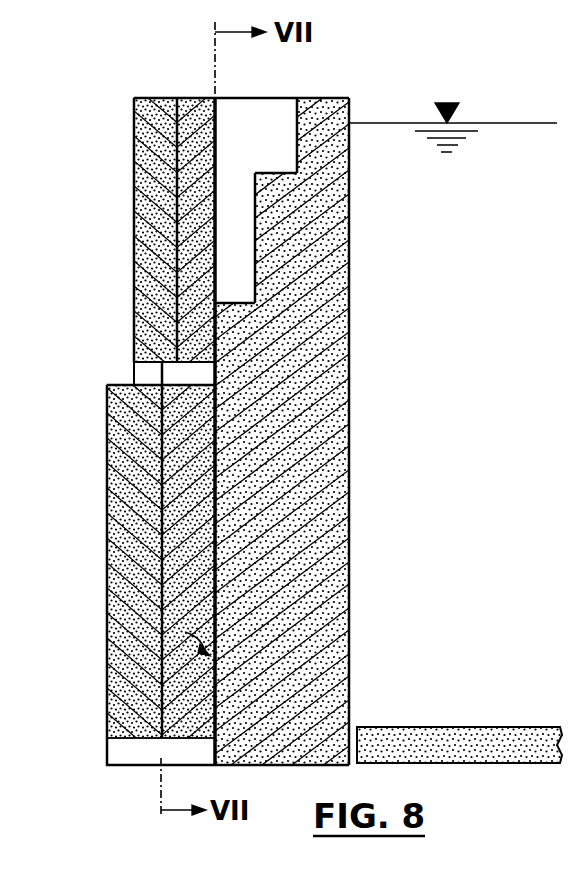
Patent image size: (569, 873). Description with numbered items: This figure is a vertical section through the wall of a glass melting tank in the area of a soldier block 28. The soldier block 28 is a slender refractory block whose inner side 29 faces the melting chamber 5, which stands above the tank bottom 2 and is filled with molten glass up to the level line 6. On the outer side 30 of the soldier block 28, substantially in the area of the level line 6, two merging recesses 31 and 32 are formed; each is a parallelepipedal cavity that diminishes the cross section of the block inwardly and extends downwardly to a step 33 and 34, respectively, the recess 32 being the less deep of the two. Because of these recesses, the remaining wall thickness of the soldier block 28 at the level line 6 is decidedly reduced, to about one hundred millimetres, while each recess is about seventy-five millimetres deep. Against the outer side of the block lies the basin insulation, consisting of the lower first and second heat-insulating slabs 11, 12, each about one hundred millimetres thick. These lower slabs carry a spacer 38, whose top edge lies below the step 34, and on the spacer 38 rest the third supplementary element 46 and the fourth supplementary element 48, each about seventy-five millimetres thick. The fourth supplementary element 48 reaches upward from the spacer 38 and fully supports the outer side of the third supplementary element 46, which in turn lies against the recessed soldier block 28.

The tank bottom 2 is at (455, 705).
The melting chamber 5 is at (455, 398).
The level line 6 is at (500, 122).
The first heat-insulating slab 11 is at (212, 470).
The second heat-insulating slab 12 is at (107, 563).
The soldier block 28 is at (405, 548).
The inner side 29 is at (356, 606).
The outer side 30 is at (190, 626).
The recess 31 is at (272, 120).
The recess 32 is at (233, 188).
The step 33 is at (274, 165).
The step 34 is at (233, 290).
The spacer 38 is at (150, 375).
The third supplementary element 46 is at (195, 98).
The fourth supplementary element 48 is at (135, 271).